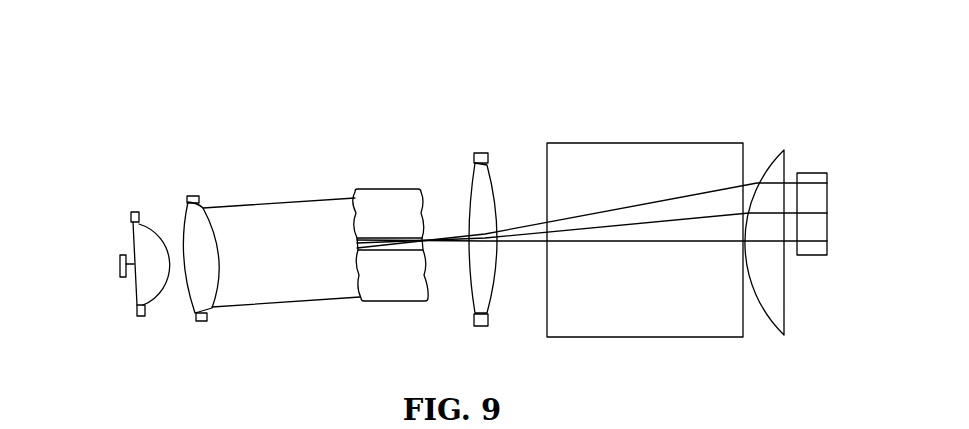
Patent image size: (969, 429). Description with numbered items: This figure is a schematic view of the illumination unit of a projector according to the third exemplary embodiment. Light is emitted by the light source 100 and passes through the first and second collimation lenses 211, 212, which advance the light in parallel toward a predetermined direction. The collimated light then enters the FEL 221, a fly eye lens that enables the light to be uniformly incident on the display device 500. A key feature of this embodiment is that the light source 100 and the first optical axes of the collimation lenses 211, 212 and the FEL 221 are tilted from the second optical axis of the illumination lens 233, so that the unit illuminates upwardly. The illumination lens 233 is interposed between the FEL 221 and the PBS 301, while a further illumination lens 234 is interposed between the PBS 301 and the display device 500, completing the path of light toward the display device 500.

The light source 100 is at (122, 257).
The first collimation lens 211 is at (147, 235).
The second collimation lens 212 is at (203, 220).
The FEL (fly eye lens) 221 is at (380, 203).
The illumination lens 233 is at (488, 177).
The PBS 301 is at (632, 160).
The illumination lens 234 is at (775, 167).
The display device 500 is at (817, 180).